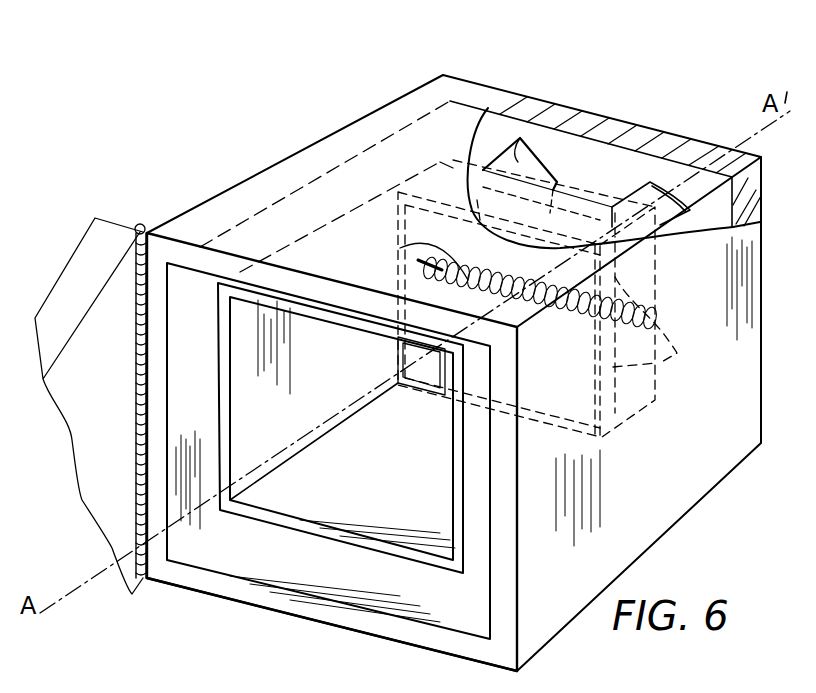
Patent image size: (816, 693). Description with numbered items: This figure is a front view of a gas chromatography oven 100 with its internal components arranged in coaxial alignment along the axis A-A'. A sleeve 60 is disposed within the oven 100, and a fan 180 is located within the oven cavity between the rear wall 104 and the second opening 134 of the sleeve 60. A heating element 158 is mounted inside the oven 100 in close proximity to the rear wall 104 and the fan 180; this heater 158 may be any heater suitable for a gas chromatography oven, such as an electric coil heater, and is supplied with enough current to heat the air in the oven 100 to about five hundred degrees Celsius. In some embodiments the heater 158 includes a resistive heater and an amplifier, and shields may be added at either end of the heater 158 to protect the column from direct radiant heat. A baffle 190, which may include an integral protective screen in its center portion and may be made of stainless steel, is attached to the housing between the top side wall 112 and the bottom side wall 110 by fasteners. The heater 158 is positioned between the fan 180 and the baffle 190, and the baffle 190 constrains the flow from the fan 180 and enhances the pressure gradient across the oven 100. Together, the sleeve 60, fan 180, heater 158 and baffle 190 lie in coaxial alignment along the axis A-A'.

The oven 100 is at (222, 193).
The top side wall 112 is at (297, 170).
The bottom side wall 110 is at (300, 610).
The rear wall 104 is at (465, 118).
The fan 180 is at (520, 138).
The heating element 158 is at (422, 258).
The baffle 190 is at (608, 393).
The second opening 134 is at (438, 360).
The sleeve 60 is at (460, 516).